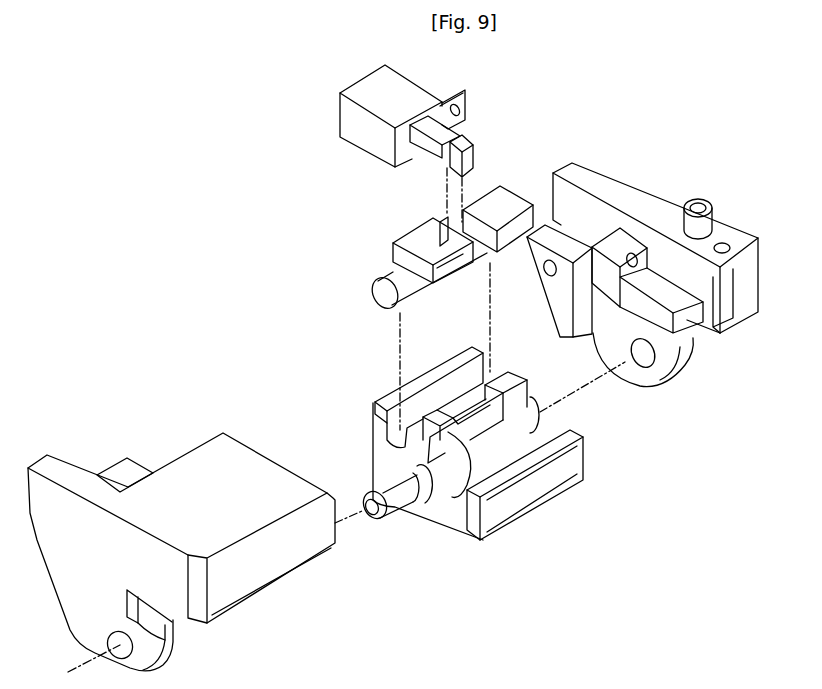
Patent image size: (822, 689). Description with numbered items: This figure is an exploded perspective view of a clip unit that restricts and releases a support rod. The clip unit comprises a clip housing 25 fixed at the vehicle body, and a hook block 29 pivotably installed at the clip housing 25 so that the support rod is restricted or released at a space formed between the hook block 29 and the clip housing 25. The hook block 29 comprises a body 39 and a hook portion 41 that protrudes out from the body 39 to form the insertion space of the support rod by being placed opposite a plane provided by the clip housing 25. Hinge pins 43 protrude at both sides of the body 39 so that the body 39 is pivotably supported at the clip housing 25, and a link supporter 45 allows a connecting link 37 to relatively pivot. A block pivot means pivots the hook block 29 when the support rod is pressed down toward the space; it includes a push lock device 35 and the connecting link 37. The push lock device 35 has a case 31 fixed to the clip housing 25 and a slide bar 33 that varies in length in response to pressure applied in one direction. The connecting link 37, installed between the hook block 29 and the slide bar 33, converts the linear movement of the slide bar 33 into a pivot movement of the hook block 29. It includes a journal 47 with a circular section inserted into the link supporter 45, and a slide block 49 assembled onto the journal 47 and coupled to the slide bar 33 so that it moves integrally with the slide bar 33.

The clip housing 25 is at (63, 475).
The hook block 29 is at (477, 452).
The case 31 is at (408, 87).
The slide bar 33 is at (455, 137).
The push lock device 35 is at (461, 136).
The connecting link 37 is at (383, 249).
The body 39 is at (427, 510).
The hook portion 41 is at (463, 517).
The hinge pins 43 is at (392, 510).
The link supporter 45 is at (398, 433).
The journal 47 is at (390, 273).
The slide block 49 is at (405, 237).